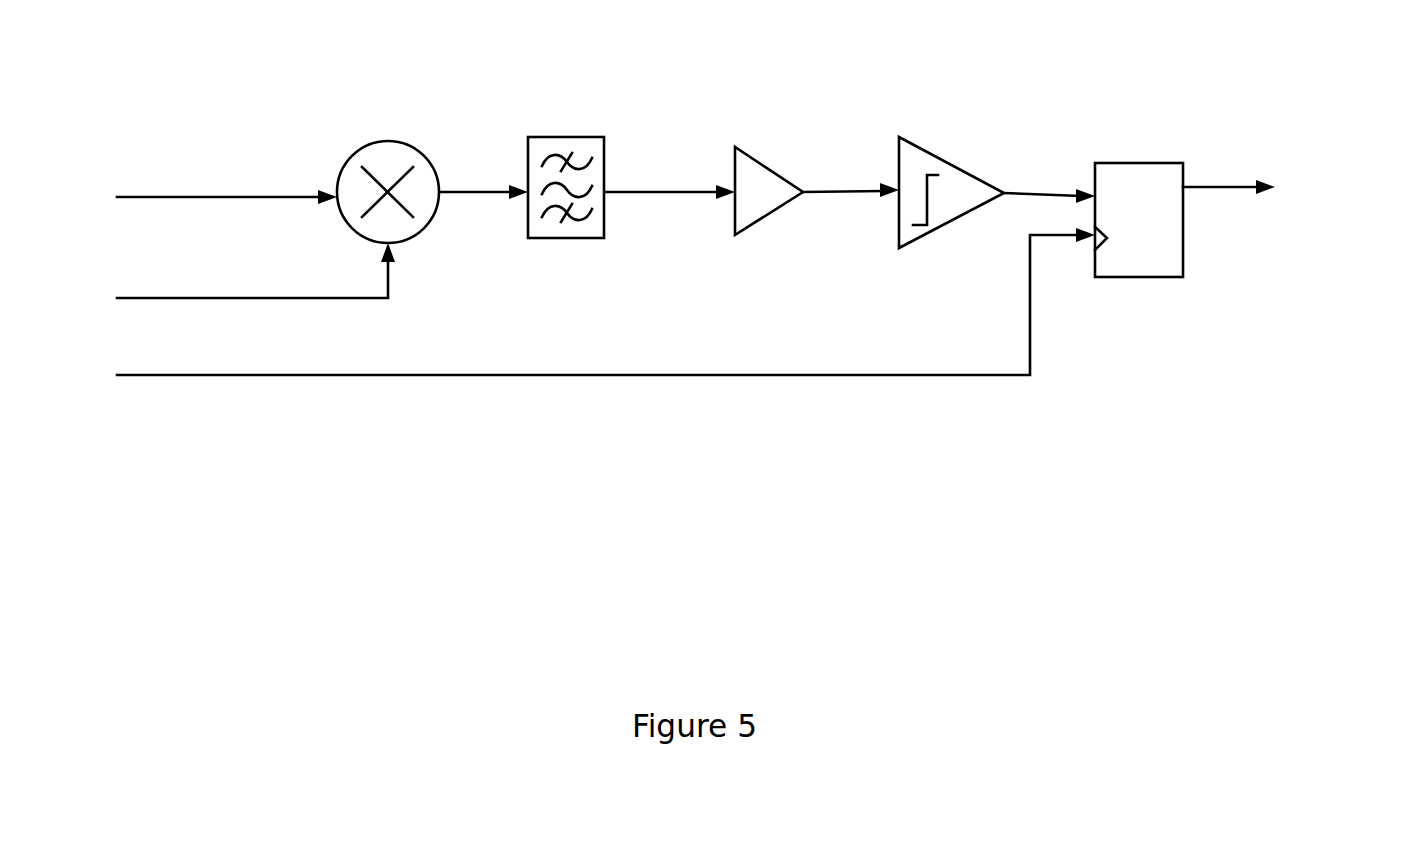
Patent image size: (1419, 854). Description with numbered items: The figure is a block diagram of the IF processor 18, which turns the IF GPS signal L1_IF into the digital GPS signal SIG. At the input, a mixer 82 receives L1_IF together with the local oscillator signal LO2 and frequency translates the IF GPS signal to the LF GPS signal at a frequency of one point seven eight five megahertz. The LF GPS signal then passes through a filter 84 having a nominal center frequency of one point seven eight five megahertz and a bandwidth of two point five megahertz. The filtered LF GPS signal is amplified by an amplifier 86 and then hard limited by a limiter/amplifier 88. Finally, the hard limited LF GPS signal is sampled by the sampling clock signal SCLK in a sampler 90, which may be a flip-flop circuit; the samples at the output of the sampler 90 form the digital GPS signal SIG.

The IF processor 18 is at (948, 483).
The mixer 82 is at (413, 132).
The filter 84 is at (620, 172).
The amplifier 86 is at (788, 145).
The limiter/amplifier 88 is at (967, 145).
The sampler 90 is at (1172, 145).